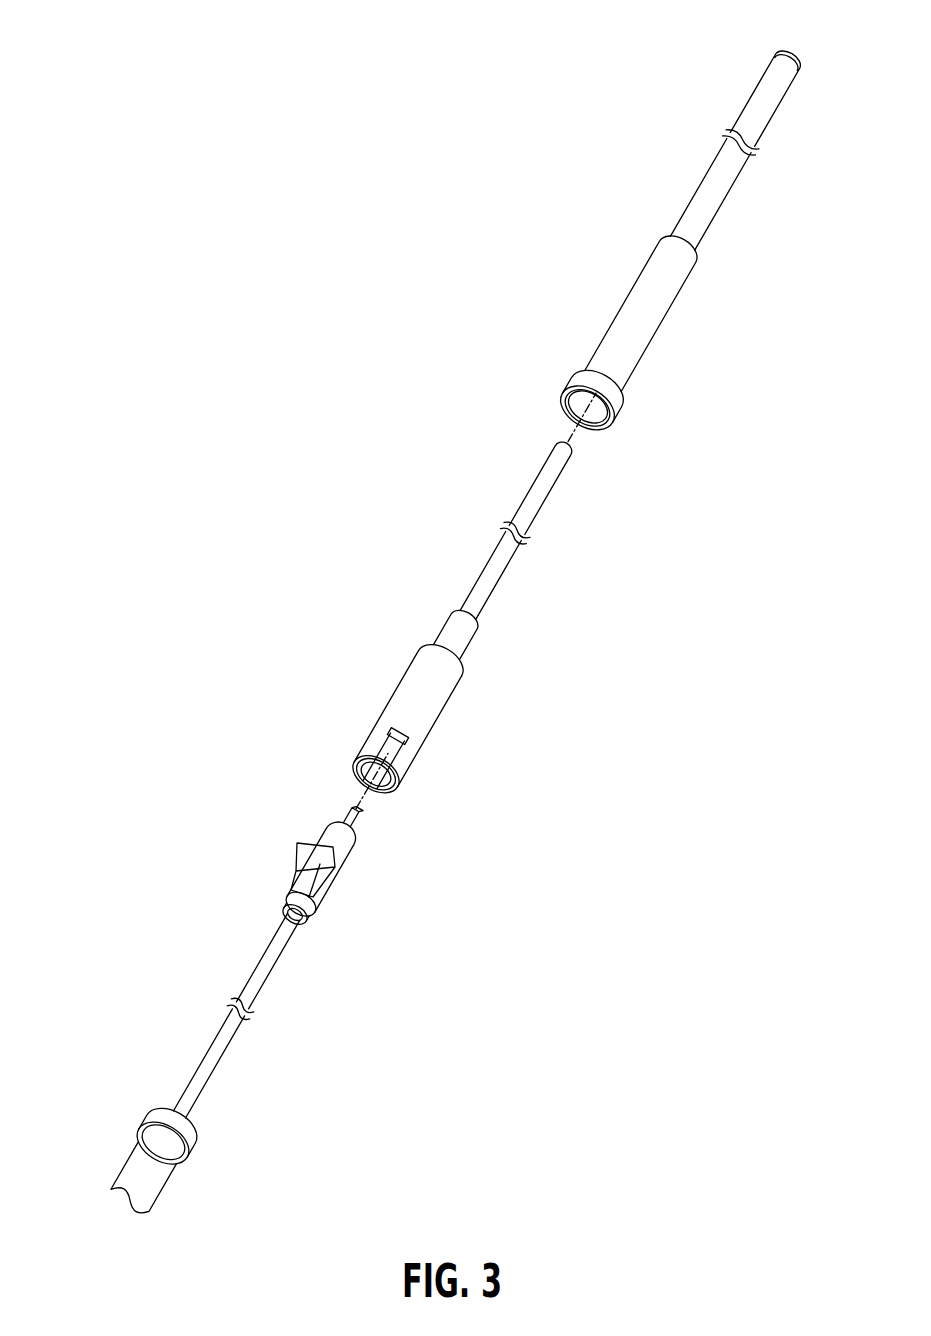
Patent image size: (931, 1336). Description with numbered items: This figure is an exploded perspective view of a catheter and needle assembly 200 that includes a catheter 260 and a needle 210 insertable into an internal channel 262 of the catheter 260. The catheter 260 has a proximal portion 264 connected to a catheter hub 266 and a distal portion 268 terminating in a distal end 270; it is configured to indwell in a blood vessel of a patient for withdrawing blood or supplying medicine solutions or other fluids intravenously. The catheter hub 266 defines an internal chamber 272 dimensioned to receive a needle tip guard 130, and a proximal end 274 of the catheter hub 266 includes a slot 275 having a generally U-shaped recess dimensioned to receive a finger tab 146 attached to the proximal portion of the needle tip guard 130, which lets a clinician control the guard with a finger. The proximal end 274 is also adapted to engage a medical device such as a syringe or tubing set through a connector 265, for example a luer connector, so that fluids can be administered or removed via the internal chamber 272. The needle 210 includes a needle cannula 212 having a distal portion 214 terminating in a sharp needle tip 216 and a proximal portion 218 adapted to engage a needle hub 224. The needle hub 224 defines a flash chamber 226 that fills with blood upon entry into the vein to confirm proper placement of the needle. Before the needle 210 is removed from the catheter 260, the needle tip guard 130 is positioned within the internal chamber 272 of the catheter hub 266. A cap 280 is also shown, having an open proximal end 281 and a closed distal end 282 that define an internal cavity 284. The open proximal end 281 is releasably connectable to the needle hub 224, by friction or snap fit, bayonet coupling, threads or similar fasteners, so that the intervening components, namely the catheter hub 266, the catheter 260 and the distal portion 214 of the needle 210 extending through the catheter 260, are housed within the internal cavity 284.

The catheter and needle assembly 200 is at (260, 373).
The needle tip guard 130 is at (266, 831).
The finger tab 146 is at (290, 872).
The needle 210 is at (285, 930).
The needle cannula 212 is at (230, 1018).
The distal portion 214 is at (359, 822).
The needle tip 216 is at (353, 806).
The proximal portion 218 is at (190, 1088).
The needle hub 224 is at (155, 1117).
The flash chamber 226 is at (134, 1167).
The catheter 260 is at (490, 568).
The internal channel 262 is at (512, 524).
The proximal portion 264 is at (461, 613).
The connector 265 is at (409, 777).
The catheter hub 266 is at (410, 692).
The distal portion 268 is at (537, 493).
The distal end 270 is at (573, 452).
The internal chamber 272 is at (387, 789).
The proximal end 274 is at (424, 752).
The slot 275 is at (380, 742).
The cap 280 is at (633, 250).
The open proximal end 281 is at (564, 373).
The closed distal end 282 is at (766, 46).
The internal cavity 284 is at (605, 416).